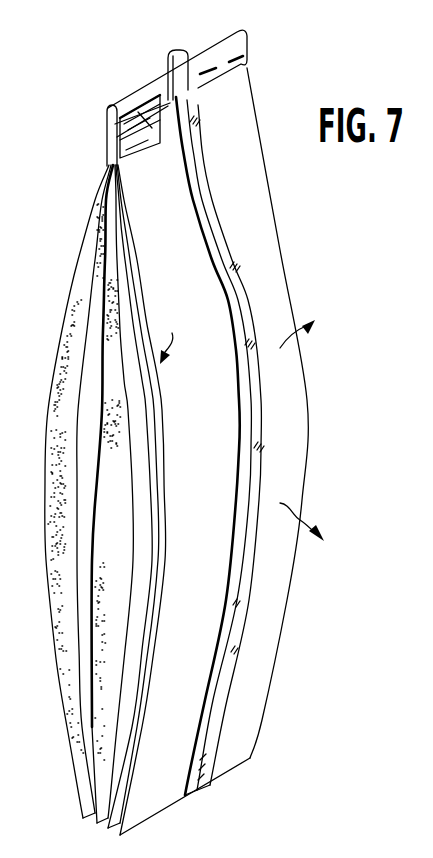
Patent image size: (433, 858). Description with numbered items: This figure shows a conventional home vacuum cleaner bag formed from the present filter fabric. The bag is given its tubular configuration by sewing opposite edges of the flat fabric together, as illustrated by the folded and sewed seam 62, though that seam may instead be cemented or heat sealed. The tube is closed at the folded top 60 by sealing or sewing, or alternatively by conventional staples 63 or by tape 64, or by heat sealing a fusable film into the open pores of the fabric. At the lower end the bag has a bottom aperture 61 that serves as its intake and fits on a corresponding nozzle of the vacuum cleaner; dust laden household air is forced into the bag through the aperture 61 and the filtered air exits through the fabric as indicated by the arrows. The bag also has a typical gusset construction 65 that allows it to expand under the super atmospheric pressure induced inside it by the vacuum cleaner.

The folded top 60 is at (132, 98).
The bottom aperture 61 is at (227, 773).
The folded and sewed seam 62 is at (213, 197).
The staples 63 is at (210, 74).
The tape 64 is at (112, 154).
The gusset construction 65 is at (132, 760).